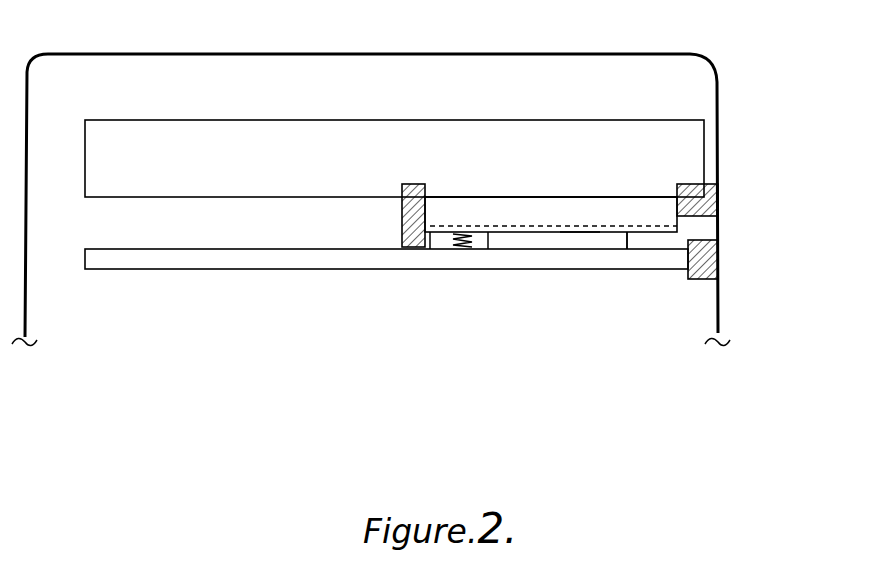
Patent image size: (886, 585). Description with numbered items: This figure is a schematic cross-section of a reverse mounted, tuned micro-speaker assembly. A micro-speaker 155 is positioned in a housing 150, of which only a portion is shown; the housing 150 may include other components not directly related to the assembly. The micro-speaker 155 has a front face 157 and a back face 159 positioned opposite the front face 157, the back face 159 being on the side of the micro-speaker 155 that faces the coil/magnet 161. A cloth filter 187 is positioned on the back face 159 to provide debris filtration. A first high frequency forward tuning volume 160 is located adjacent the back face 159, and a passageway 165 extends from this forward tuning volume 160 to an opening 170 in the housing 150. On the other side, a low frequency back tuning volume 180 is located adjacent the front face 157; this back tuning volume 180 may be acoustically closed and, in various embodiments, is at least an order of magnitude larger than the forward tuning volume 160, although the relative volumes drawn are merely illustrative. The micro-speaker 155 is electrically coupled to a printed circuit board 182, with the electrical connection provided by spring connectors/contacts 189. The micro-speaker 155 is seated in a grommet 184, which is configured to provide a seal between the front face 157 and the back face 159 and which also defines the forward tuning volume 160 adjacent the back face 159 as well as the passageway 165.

The housing 150 is at (722, 138).
The micro-speaker 155 is at (622, 213).
The front face 157 is at (572, 197).
The back face 159 is at (637, 240).
The first high frequency forward tuning volume 160 is at (482, 240).
The coil/magnet 161 is at (577, 235).
The passageway 165 is at (678, 238).
The opening 170 is at (730, 224).
The low frequency back tuning volume 180 is at (469, 147).
The printed circuit board 182 is at (203, 263).
The grommet 184 is at (402, 211).
The cloth filter 187 is at (437, 233).
The spring connectors/contacts 189 is at (463, 240).